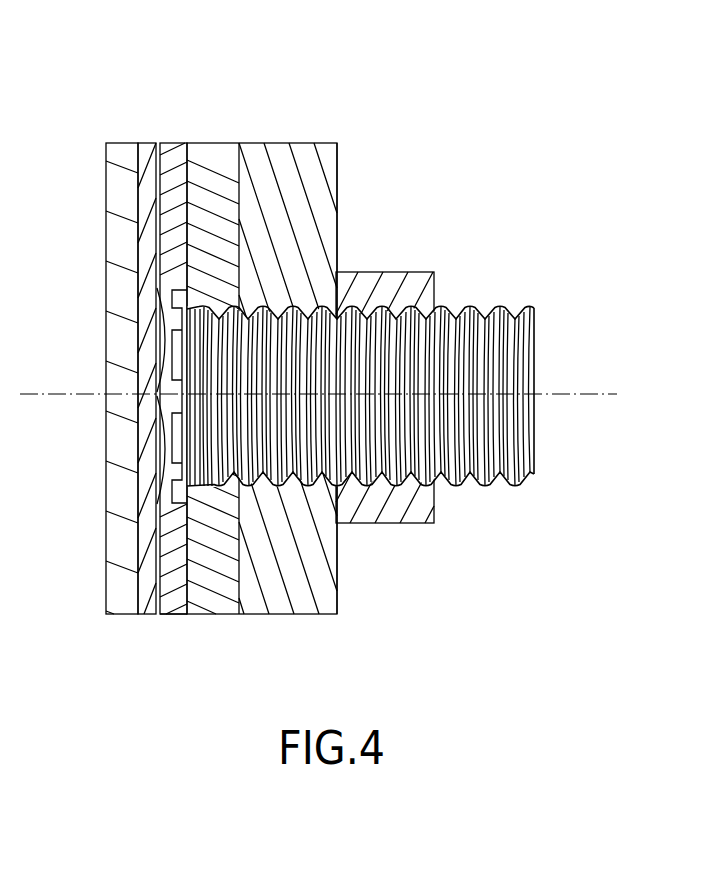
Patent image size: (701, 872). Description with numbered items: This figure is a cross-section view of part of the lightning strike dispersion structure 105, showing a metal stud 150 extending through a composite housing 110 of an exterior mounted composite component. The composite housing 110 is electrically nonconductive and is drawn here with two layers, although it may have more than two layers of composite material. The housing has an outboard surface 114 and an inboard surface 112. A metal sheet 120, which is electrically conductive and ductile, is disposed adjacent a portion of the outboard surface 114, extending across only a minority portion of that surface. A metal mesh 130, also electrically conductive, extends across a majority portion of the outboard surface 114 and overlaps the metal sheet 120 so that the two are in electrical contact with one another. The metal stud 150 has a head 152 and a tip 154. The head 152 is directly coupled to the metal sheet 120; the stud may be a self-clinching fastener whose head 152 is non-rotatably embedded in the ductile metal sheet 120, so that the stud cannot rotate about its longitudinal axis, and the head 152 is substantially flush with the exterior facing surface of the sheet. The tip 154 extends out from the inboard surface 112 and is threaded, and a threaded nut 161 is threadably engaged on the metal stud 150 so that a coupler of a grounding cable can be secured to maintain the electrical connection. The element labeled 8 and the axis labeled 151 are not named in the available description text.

The lightning strike dispersion structure 105 is at (512, 65).
The panel 8 is at (120, 205).
The metal mesh 130 is at (147, 148).
The metal sheet 120 is at (173, 150).
The composite housing 110 is at (337, 130).
The inboard surface 112 is at (337, 583).
The outboard surface 114 is at (180, 602).
The threaded nut 161 is at (388, 282).
The metal stud 150 is at (481, 508).
The longitudinal axis 151 is at (583, 395).
The head 152 is at (167, 335).
The tip 154 is at (535, 372).